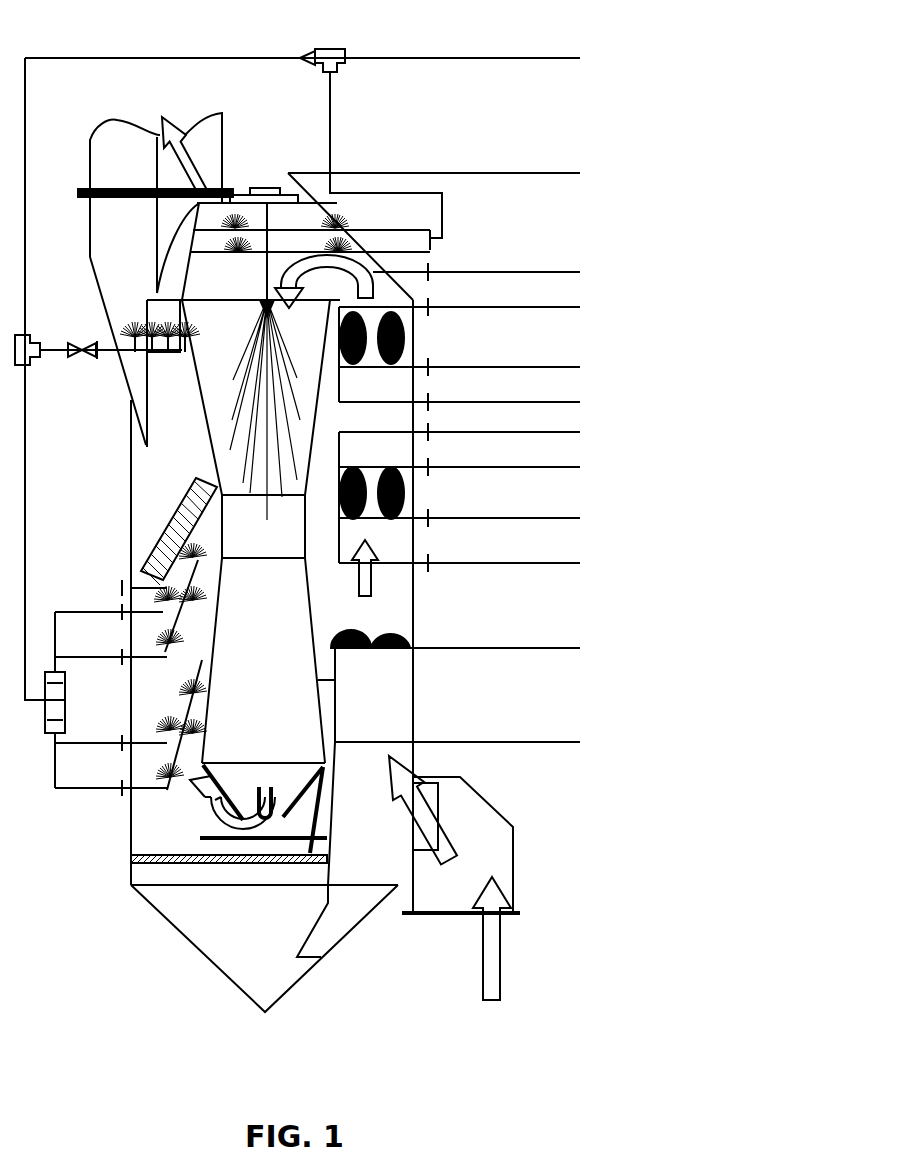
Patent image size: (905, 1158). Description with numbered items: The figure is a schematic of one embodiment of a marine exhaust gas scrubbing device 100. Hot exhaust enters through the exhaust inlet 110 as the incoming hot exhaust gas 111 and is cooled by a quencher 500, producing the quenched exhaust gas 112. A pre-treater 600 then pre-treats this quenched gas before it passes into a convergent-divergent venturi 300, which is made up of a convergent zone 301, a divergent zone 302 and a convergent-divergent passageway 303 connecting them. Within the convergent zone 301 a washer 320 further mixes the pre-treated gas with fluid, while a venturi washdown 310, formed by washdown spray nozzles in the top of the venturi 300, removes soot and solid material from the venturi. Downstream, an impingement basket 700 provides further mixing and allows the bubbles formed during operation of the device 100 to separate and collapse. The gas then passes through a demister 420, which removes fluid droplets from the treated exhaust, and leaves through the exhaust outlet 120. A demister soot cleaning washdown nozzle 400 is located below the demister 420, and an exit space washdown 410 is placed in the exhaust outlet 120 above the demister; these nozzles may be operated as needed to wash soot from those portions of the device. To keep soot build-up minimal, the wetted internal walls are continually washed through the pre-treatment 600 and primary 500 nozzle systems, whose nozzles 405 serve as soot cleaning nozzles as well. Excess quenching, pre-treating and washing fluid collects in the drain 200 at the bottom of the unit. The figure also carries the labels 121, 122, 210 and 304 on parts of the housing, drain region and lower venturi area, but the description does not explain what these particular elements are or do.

The marine exhaust gas scrubbing device 100 is at (183, 956).
The exhaust inlet 110 is at (330, 818).
The incoming hot exhaust gas 111 is at (437, 838).
The quenched exhaust gas 112 is at (375, 572).
The exhaust outlet 120 is at (120, 108).
The lower housing box 121 is at (400, 685).
The outer casing wall 122 is at (150, 470).
The drain 200 is at (263, 1015).
The hopper discharge 210 is at (322, 948).
The convergent-divergent venturi 300 is at (323, 405).
The convergent zone 301 is at (318, 440).
The divergent zone 302 is at (320, 682).
The convergent-divergent passageway 303 is at (307, 522).
The recirculation device 304 is at (247, 796).
The venturi washdown 310 is at (236, 217).
The washer 320 is at (300, 314).
The demister soot cleaning washdown nozzle 400 is at (168, 580).
The nozzles 405 is at (163, 612).
The exit space washdown 410 is at (125, 328).
The demister 420 is at (175, 537).
The quencher 500 is at (410, 634).
The pre-treater 600 is at (407, 322).
The impingement basket 700 is at (131, 858).